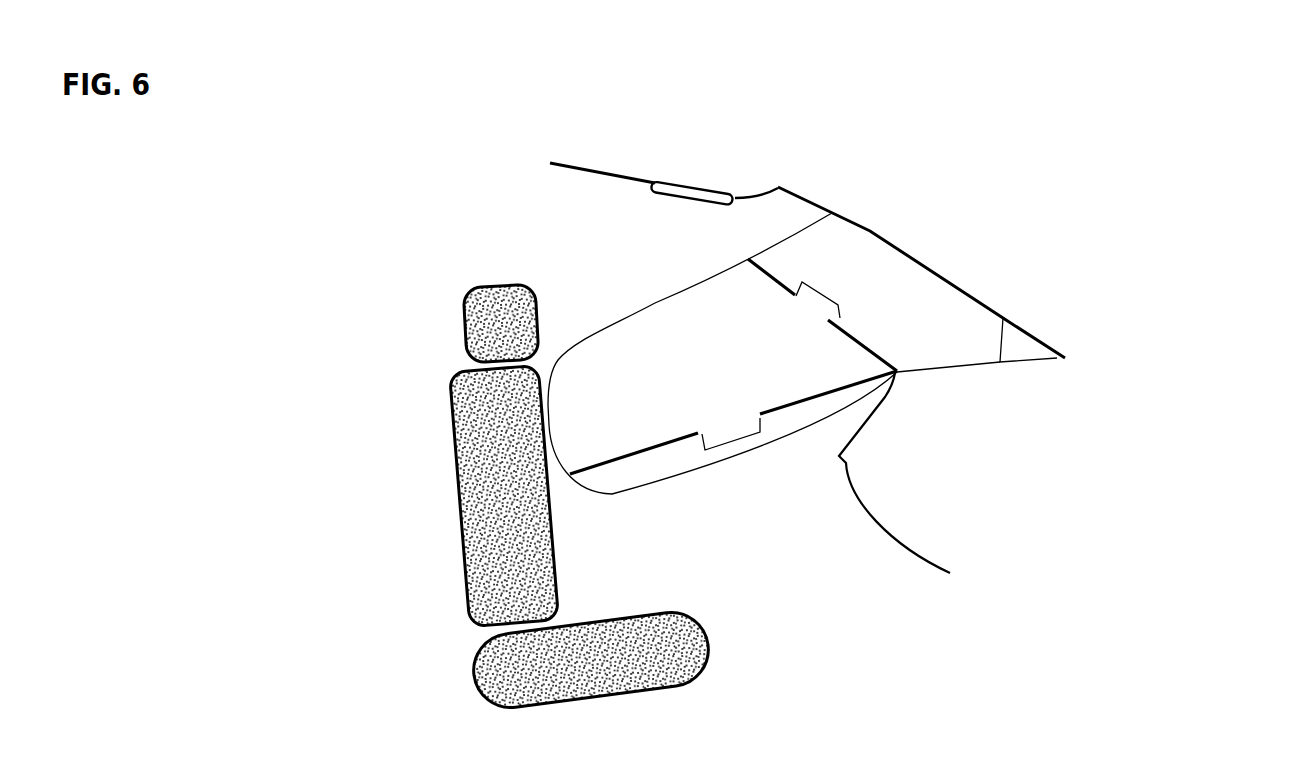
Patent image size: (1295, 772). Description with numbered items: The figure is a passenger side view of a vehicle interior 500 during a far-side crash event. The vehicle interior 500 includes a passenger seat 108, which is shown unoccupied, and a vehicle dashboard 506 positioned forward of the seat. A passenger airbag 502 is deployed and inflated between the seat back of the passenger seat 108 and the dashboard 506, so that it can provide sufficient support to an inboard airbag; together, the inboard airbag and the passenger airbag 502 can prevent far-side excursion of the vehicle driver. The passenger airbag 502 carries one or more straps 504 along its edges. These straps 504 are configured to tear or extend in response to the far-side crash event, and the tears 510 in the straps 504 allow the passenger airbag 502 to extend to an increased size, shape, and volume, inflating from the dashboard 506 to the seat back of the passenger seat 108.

The passenger seat 108 is at (445, 432).
The vehicle interior 500 is at (1170, 137).
The passenger airbag 502 is at (762, 371).
The straps 504 is at (653, 437).
The vehicle dashboard 506 is at (955, 457).
The tears 510 is at (826, 293).